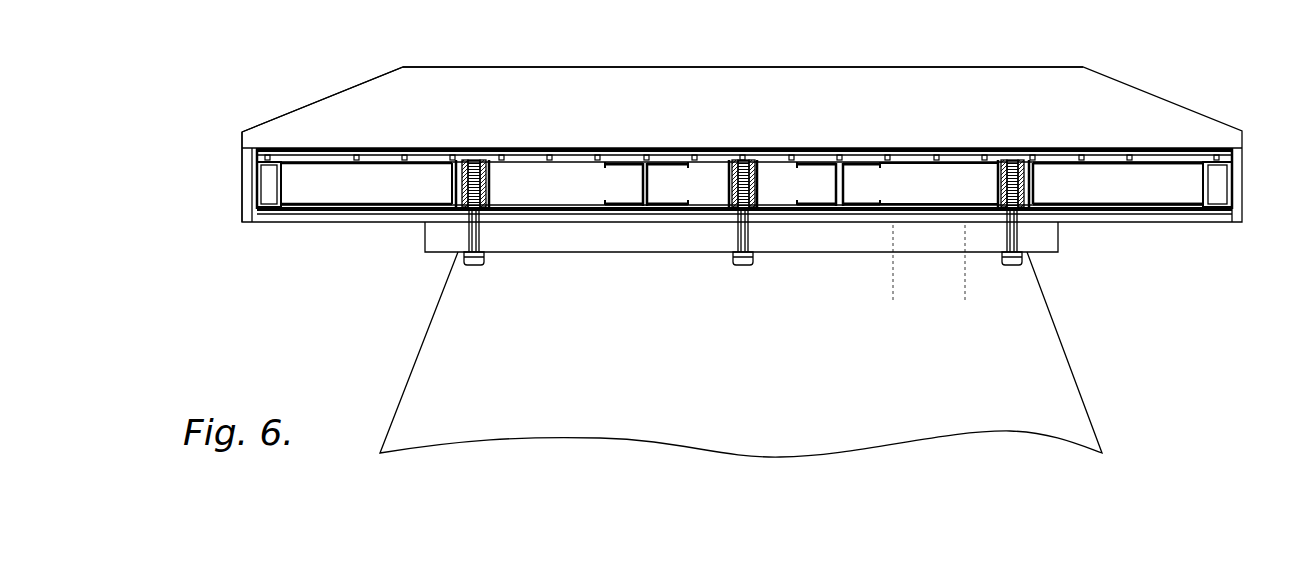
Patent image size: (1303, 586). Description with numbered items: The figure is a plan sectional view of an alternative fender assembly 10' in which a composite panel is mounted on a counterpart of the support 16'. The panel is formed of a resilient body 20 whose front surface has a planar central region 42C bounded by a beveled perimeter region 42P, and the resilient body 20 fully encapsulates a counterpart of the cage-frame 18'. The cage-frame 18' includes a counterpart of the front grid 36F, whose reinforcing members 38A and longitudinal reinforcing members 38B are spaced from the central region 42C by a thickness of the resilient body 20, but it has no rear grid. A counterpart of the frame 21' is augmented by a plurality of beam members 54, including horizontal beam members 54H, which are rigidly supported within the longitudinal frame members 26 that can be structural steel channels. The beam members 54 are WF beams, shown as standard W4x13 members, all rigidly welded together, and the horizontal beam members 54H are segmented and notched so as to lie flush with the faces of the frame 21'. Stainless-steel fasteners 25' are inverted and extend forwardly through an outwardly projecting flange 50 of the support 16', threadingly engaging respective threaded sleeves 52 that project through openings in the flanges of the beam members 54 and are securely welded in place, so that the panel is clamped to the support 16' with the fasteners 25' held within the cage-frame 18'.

The fender assembly 10' is at (321, 335).
The support 16' is at (734, 354).
The cage-frame 18' is at (231, 155).
The resilient body 20 is at (658, 67).
The frame 21' is at (319, 215).
The fasteners 25' is at (743, 259).
The longitudinal frame members 26 is at (270, 210).
The front grid 36F is at (562, 148).
The reinforcing members 38A is at (845, 148).
The longitudinal reinforcing members 38B is at (687, 148).
The planar central region 42C is at (835, 67).
The beveled perimeter region 42P is at (338, 97).
The outwardly projecting flange 50 is at (424, 252).
The threaded sleeves 52 is at (490, 185).
The beam members 54 is at (1110, 162).
The horizontal beam members 54H is at (742, 183).
The W4×13 members W4x13 is at (845, 178).